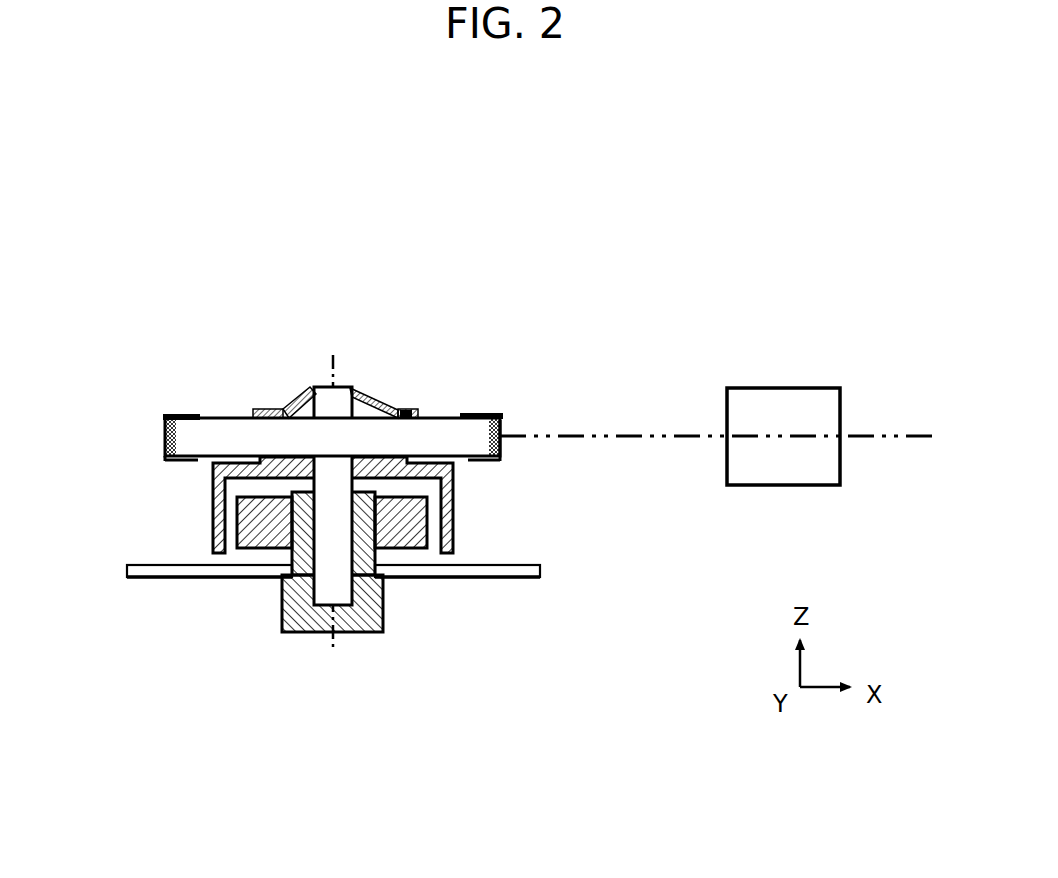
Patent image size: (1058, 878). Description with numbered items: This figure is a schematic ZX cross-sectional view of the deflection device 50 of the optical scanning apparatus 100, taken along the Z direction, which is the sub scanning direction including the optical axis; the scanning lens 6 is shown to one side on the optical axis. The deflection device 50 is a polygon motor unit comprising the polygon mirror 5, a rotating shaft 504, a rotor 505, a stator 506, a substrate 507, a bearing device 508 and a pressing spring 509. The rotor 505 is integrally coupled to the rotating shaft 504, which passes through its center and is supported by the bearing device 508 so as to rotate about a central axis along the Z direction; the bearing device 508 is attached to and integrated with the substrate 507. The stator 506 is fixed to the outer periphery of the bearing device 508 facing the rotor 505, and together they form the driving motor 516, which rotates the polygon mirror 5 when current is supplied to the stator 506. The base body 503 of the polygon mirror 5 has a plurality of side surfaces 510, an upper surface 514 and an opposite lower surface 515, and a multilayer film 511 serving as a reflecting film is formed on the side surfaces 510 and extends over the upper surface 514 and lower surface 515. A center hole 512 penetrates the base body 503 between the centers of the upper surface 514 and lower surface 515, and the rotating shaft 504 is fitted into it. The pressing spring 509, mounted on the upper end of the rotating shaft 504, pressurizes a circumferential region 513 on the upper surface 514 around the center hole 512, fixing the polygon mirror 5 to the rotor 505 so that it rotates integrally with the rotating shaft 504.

The optical scanning apparatus 100 is at (872, 211).
The deflection device 50 is at (171, 311).
The polygon mirror 5 is at (148, 440).
The scanning lens 6 is at (786, 400).
The base body 503 is at (213, 425).
The rotating shaft 504 is at (318, 388).
The rotor 505 is at (397, 468).
The stator 506 is at (395, 540).
The substrate 507 is at (145, 570).
The bearing device 508 is at (295, 620).
The pressing spring 509 is at (366, 398).
The side surface 510 is at (503, 428).
The multilayer film 511 is at (503, 440).
The center hole 512 is at (290, 420).
The region 513 is at (400, 418).
The upper surface 514 is at (452, 418).
The lower surface 515 is at (455, 460).
The driving motor 516 is at (478, 687).